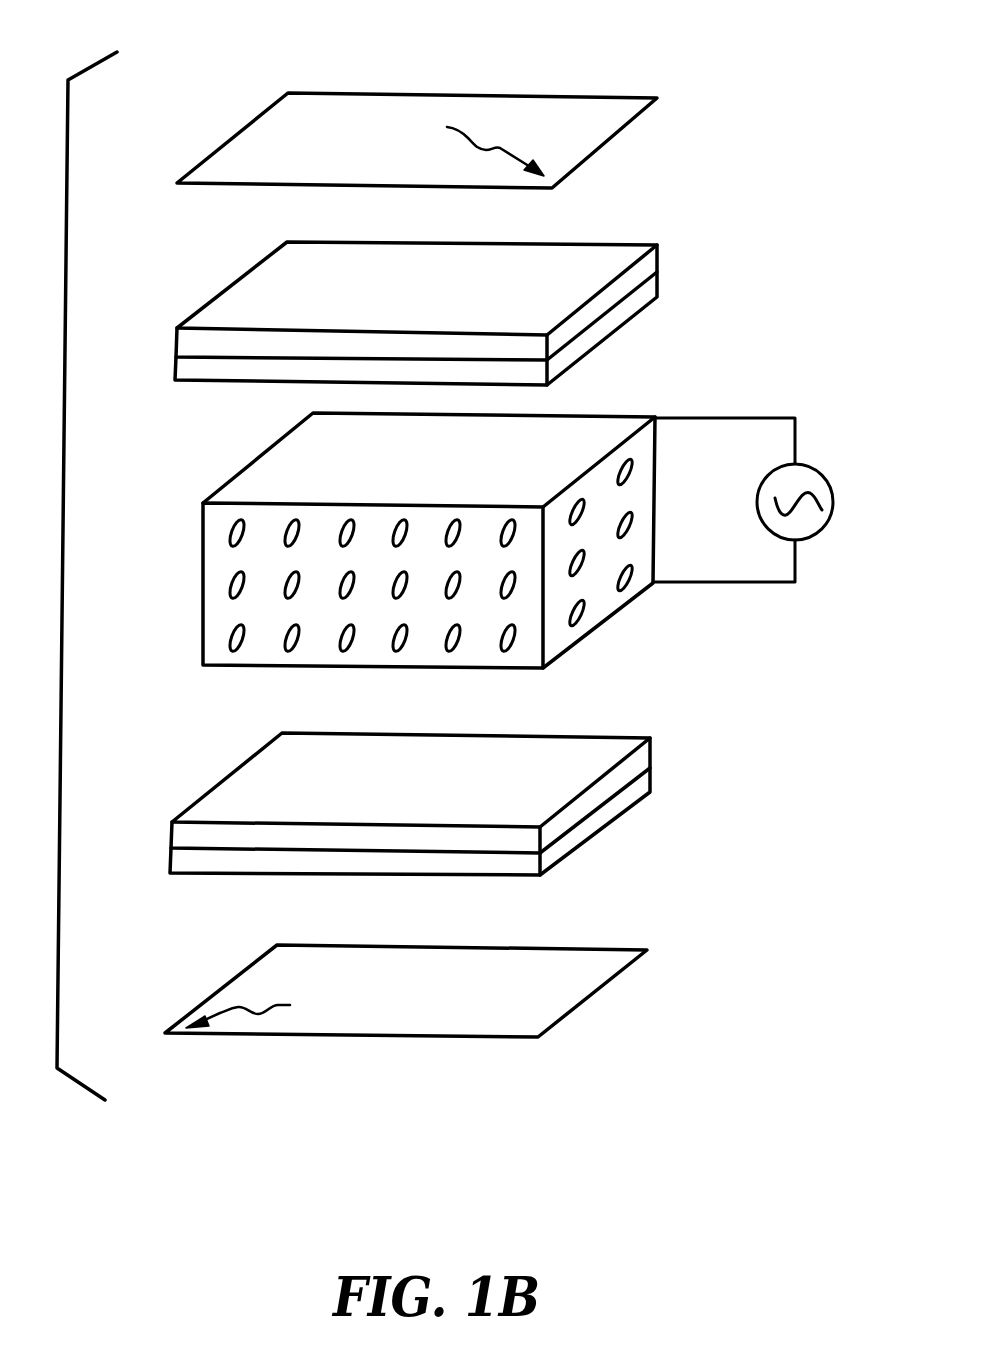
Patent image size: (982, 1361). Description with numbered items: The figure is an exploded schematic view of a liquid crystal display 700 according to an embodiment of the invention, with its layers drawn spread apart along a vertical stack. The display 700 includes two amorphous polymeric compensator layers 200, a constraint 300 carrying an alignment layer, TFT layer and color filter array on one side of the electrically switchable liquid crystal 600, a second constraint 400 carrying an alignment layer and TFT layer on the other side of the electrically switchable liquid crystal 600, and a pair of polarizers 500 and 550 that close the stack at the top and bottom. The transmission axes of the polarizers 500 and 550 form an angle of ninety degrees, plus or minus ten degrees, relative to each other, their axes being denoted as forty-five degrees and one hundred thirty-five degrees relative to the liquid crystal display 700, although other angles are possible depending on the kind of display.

The liquid crystal display 700 is at (455, 79).
The polarizer 500 is at (575, 110).
The constraint 300 is at (615, 295).
The amorphous polymeric compensator layer 200 is at (617, 318).
The electrically switchable liquid crystal 600 is at (217, 613).
The second constraint 400 is at (608, 812).
The polarizer 550 is at (605, 963).